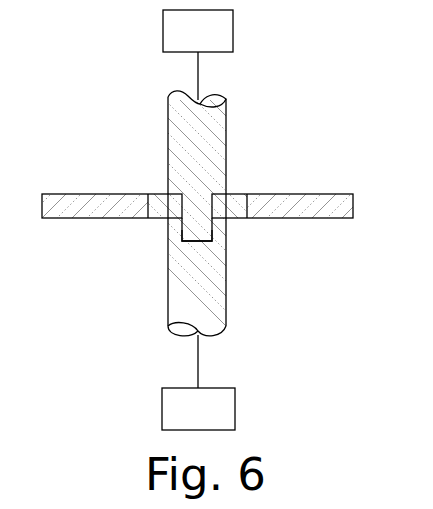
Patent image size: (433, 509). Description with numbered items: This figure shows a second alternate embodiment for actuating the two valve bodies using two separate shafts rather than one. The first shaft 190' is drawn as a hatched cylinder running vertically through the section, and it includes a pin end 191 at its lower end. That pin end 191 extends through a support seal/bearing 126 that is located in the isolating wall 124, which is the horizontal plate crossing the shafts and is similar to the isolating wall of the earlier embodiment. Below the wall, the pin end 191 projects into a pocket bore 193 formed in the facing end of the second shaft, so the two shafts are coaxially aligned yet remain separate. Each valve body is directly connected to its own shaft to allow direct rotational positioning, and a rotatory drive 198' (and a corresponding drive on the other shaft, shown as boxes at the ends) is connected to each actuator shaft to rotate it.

The first shaft 190' is at (239, 142).
The isolating wall 124 is at (343, 193).
The support seal/bearing 126 is at (240, 193).
The pin end 191 is at (190, 232).
The pocket bore 193 is at (214, 231).
The rotatory drive 198' is at (198, 382).